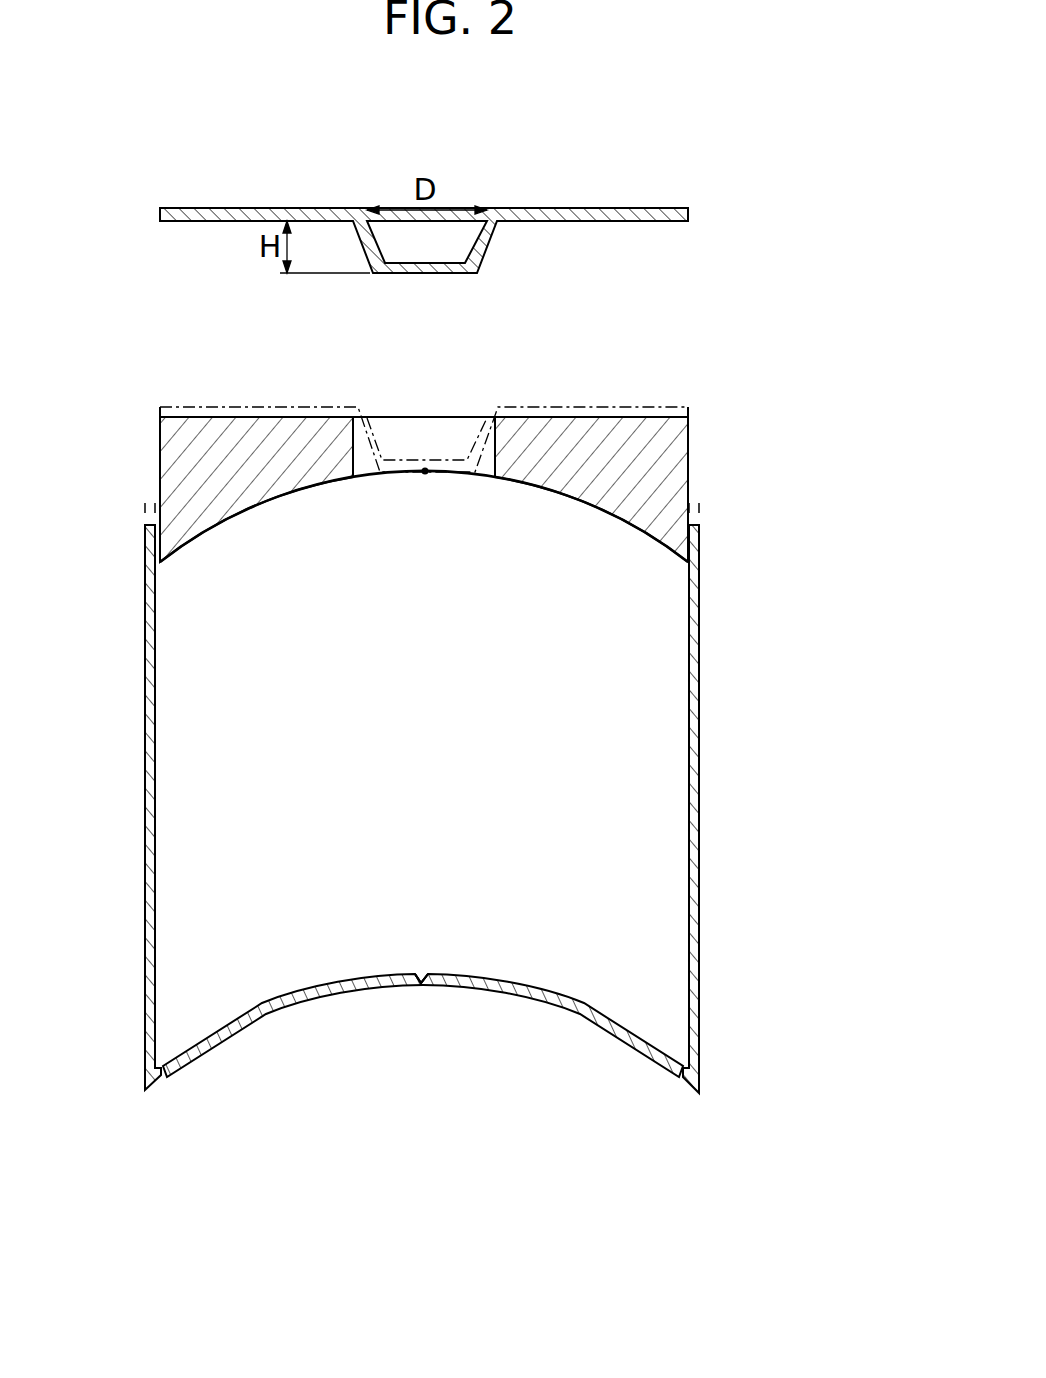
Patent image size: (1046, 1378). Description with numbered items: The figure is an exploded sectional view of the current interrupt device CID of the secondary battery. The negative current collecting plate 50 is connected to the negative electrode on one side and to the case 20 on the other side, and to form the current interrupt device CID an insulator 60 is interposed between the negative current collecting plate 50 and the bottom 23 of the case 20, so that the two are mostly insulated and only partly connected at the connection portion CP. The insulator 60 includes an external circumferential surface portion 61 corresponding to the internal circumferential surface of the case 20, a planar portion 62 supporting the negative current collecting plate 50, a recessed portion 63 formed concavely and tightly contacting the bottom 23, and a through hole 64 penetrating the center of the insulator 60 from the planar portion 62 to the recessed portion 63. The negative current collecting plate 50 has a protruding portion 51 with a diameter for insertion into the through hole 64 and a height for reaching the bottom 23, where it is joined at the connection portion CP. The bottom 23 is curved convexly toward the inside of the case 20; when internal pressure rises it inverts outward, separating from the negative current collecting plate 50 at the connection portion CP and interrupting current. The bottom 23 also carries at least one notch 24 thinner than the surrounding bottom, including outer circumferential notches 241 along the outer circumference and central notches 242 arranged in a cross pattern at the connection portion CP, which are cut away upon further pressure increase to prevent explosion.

The case 20 is at (456, 857).
The bottom of the case 23 is at (452, 1014).
The notch 24 is at (423, 1092).
The outer circumferential notch 241 is at (168, 1074).
The central notch 242 is at (423, 987).
The negative current collecting plate 50 is at (623, 181).
The protruding portion 51 is at (434, 277).
The insulator 60 is at (435, 537).
The external circumferential surface portion 61 is at (175, 467).
The planar portion 62 is at (260, 415).
The recessed portion 63 is at (224, 522).
The through hole 64 is at (365, 478).
The connection portion CP is at (425, 476).
The current interrupt device CID is at (466, 500).